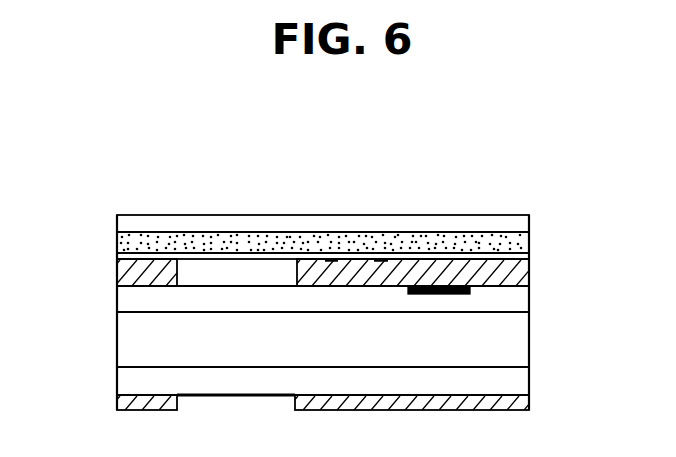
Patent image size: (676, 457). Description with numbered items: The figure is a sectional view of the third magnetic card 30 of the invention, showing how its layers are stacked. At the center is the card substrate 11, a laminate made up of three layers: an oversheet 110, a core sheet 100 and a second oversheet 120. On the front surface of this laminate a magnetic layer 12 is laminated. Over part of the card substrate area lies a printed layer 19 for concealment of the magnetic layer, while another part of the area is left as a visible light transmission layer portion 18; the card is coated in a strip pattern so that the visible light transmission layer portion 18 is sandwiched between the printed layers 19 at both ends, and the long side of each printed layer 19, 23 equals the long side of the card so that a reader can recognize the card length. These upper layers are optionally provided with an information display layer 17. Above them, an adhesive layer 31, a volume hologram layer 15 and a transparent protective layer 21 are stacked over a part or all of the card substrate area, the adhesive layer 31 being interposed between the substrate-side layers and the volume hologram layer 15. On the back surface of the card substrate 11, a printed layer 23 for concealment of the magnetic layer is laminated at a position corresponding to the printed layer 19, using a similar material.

The third magnetic card 30 is at (145, 166).
The transparent protective layer 21 is at (529, 224).
The volume hologram layer 15 is at (529, 242).
The adhesive layer 31 is at (529, 257).
The information display layer 17 is at (358, 262).
The printed layer for concealment of the magnetic layer 19 is at (529, 275).
The visible light transmission layer portion 18 is at (233, 270).
The magnetic layer 12 is at (436, 288).
The card substrate 11 is at (97, 280).
The oversheet 110 is at (529, 302).
The core sheet 100 is at (529, 343).
The oversheet 120 is at (529, 380).
The printed layer for concealment of the magnetic layer 23 is at (529, 403).